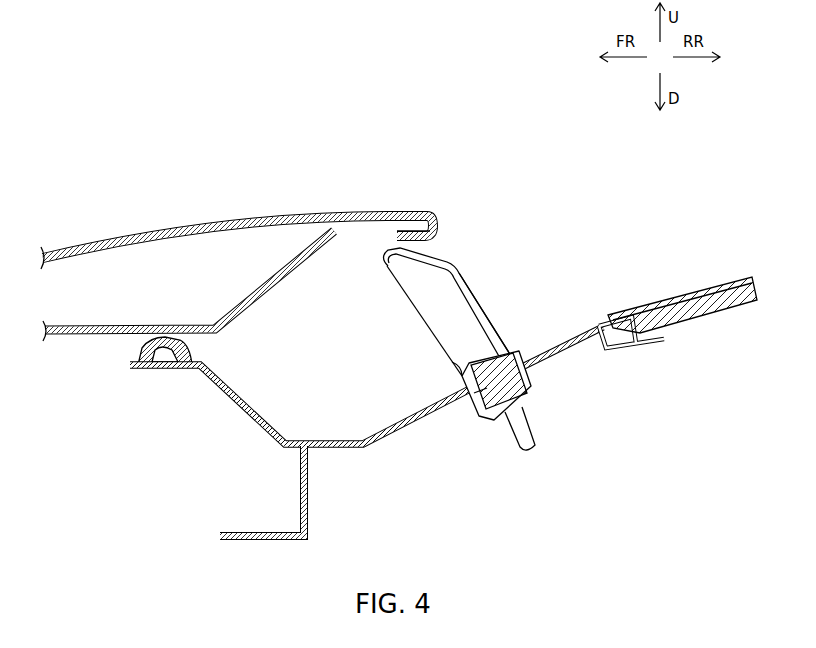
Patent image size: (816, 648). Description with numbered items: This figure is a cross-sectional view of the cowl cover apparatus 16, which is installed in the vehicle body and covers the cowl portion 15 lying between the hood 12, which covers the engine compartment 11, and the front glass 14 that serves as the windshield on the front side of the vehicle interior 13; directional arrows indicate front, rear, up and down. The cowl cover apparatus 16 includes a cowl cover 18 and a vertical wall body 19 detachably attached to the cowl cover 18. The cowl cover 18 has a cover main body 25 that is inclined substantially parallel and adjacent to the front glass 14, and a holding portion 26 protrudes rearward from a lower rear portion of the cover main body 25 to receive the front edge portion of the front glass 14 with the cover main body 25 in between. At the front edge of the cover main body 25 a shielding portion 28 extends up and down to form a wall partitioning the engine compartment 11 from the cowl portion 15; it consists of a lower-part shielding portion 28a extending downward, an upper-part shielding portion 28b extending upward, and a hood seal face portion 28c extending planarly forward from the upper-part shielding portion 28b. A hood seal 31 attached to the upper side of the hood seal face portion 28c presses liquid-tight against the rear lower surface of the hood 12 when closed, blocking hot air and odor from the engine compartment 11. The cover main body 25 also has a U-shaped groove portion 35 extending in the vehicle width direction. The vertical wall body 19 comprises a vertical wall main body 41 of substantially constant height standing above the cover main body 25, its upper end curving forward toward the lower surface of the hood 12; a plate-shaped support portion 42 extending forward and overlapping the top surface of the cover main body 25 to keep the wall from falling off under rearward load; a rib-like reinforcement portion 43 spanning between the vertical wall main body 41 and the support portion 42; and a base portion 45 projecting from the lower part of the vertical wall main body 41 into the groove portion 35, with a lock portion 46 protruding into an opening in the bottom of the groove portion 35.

The engine compartment 11 is at (182, 495).
The hood 12 is at (369, 189).
The vehicle interior 13 is at (713, 328).
The front glass 14 is at (733, 282).
The cowl portion 15 is at (630, 448).
The cowl cover apparatus 16 is at (566, 214).
The cowl cover 18 is at (342, 403).
The vertical wall body 19 is at (460, 249).
The cover main body 25 is at (570, 340).
The holding portion 26 is at (637, 347).
The shielding portion 28 is at (255, 417).
The lower-part shielding portion 28a is at (308, 512).
The upper-part shielding portion 28b is at (232, 380).
The hood seal face portion 28c is at (152, 372).
The hood seal 31 is at (137, 347).
The groove portion 35 is at (527, 385).
The vertical wall main body 41 is at (470, 297).
The support portion 42 is at (452, 363).
The reinforcement portion 43 is at (428, 308).
The base portion 45 is at (490, 402).
The lock portion 46 is at (530, 430).